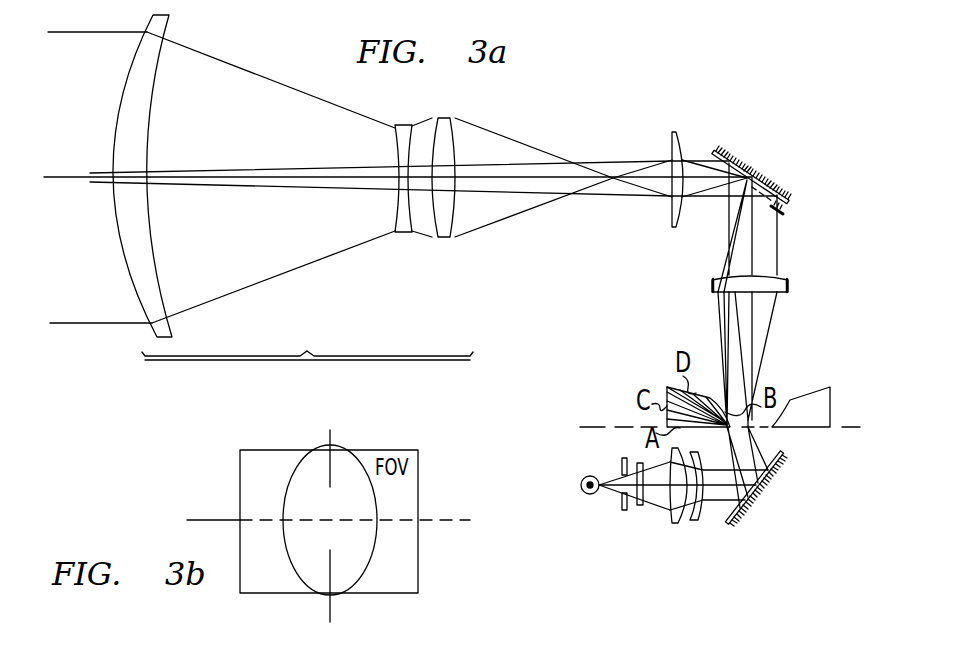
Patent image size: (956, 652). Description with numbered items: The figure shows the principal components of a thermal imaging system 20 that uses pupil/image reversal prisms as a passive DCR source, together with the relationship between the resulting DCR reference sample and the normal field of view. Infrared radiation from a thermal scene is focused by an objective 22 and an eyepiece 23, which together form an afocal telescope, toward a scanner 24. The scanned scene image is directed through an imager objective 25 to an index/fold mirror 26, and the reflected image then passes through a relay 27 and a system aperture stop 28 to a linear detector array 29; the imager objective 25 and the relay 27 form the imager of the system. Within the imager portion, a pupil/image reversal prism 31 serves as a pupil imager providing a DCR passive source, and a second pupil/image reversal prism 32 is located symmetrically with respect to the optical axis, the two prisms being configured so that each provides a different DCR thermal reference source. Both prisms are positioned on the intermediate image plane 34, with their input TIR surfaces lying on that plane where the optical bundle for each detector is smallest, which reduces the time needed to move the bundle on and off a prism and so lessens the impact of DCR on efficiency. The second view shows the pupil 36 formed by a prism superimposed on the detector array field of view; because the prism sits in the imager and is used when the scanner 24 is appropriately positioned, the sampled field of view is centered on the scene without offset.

In FIG. 3a, the thermal imaging system 20 is at (558, 253).
In FIG. 3a, the objective 22 is at (293, 207).
In FIG. 3a, the eyepiece 23 is at (672, 132).
In FIG. 3a, the scanner 24 is at (763, 158).
In FIG. 3a, the imager objective 25 is at (712, 286).
In FIG. 3a, the index/fold mirror 26 is at (762, 496).
In FIG. 3a, the relay 27 is at (686, 527).
In FIG. 3a, the system aperture stop 28 is at (622, 510).
In FIG. 3a, the linear detector array 29 is at (582, 490).
In FIG. 3a, the pupil/image reversal prism 31 is at (668, 392).
In FIG. 3a, the second pupil/image reversal prism 32 is at (833, 392).
In FIG. 3a, the intermediate image plane 34 is at (622, 427).
In FIG. 3b, the pupil 36 is at (365, 584).